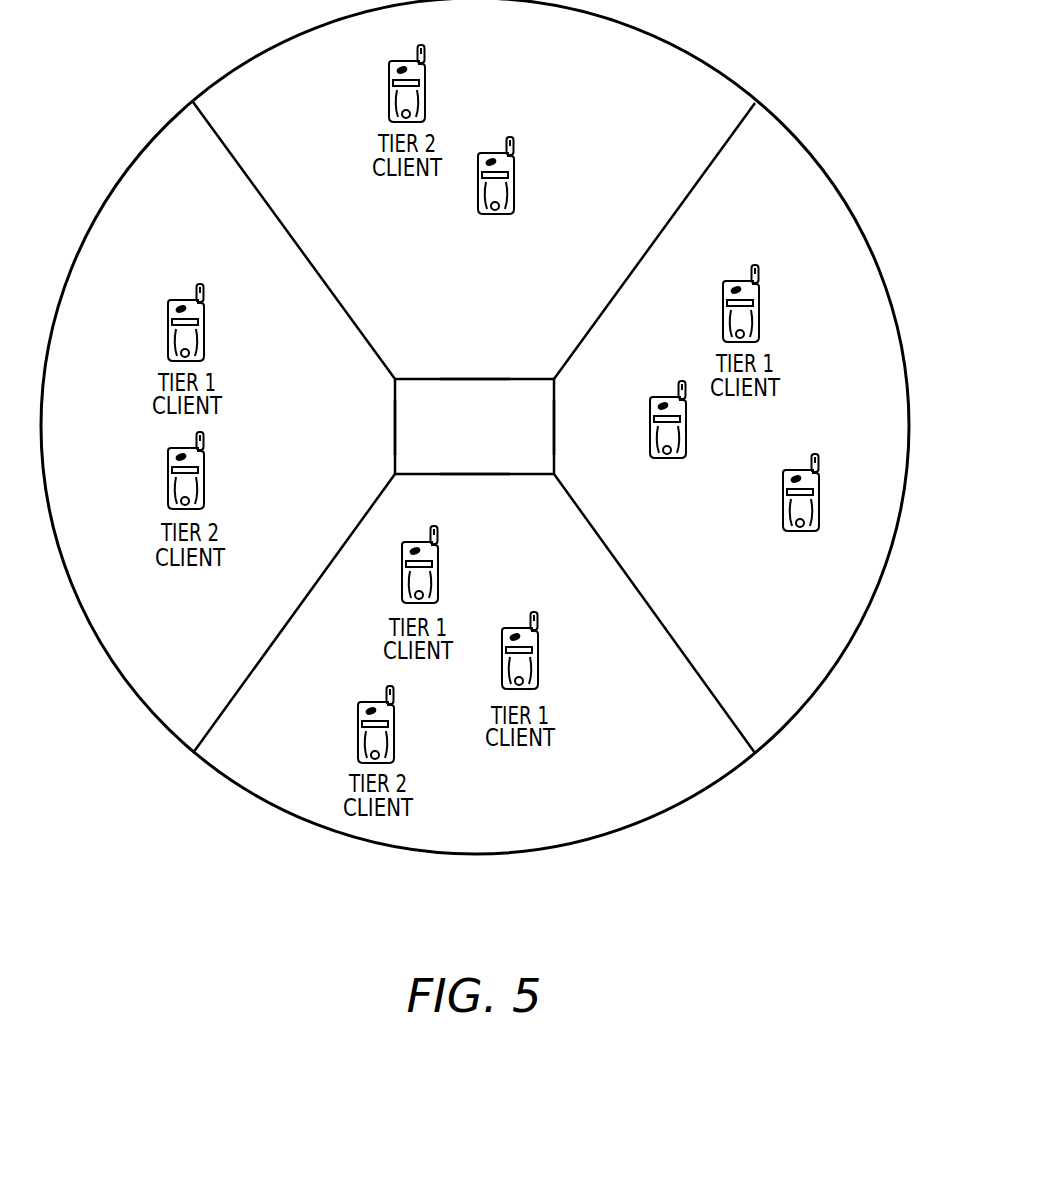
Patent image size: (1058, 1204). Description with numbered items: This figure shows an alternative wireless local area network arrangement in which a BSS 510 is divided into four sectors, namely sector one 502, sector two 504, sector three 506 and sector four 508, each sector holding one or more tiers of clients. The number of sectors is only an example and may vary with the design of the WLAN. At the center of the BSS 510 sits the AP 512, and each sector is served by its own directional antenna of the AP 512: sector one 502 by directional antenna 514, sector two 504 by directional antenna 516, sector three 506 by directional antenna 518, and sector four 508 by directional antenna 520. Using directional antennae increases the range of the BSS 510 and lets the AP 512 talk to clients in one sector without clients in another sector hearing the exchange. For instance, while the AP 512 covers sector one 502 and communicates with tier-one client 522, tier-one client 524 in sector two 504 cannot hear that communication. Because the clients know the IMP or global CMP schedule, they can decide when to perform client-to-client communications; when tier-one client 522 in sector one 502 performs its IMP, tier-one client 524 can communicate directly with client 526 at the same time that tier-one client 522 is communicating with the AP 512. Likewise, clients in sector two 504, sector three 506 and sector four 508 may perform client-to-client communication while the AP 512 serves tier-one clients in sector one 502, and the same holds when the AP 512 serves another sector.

The sector one 502 is at (408, 218).
The sector two 504 is at (682, 241).
The sector three 506 is at (654, 633).
The sector four 508 is at (265, 471).
The BSS 510 is at (712, 60).
The AP 512 is at (474, 426).
The directional antenna 514 is at (475, 378).
The directional antenna 516 is at (557, 428).
The directional antenna 518 is at (473, 476).
The directional antenna 520 is at (394, 427).
The tier 1 client 522 is at (516, 181).
The tier 1 client 524 is at (688, 432).
The client 526 is at (822, 500).